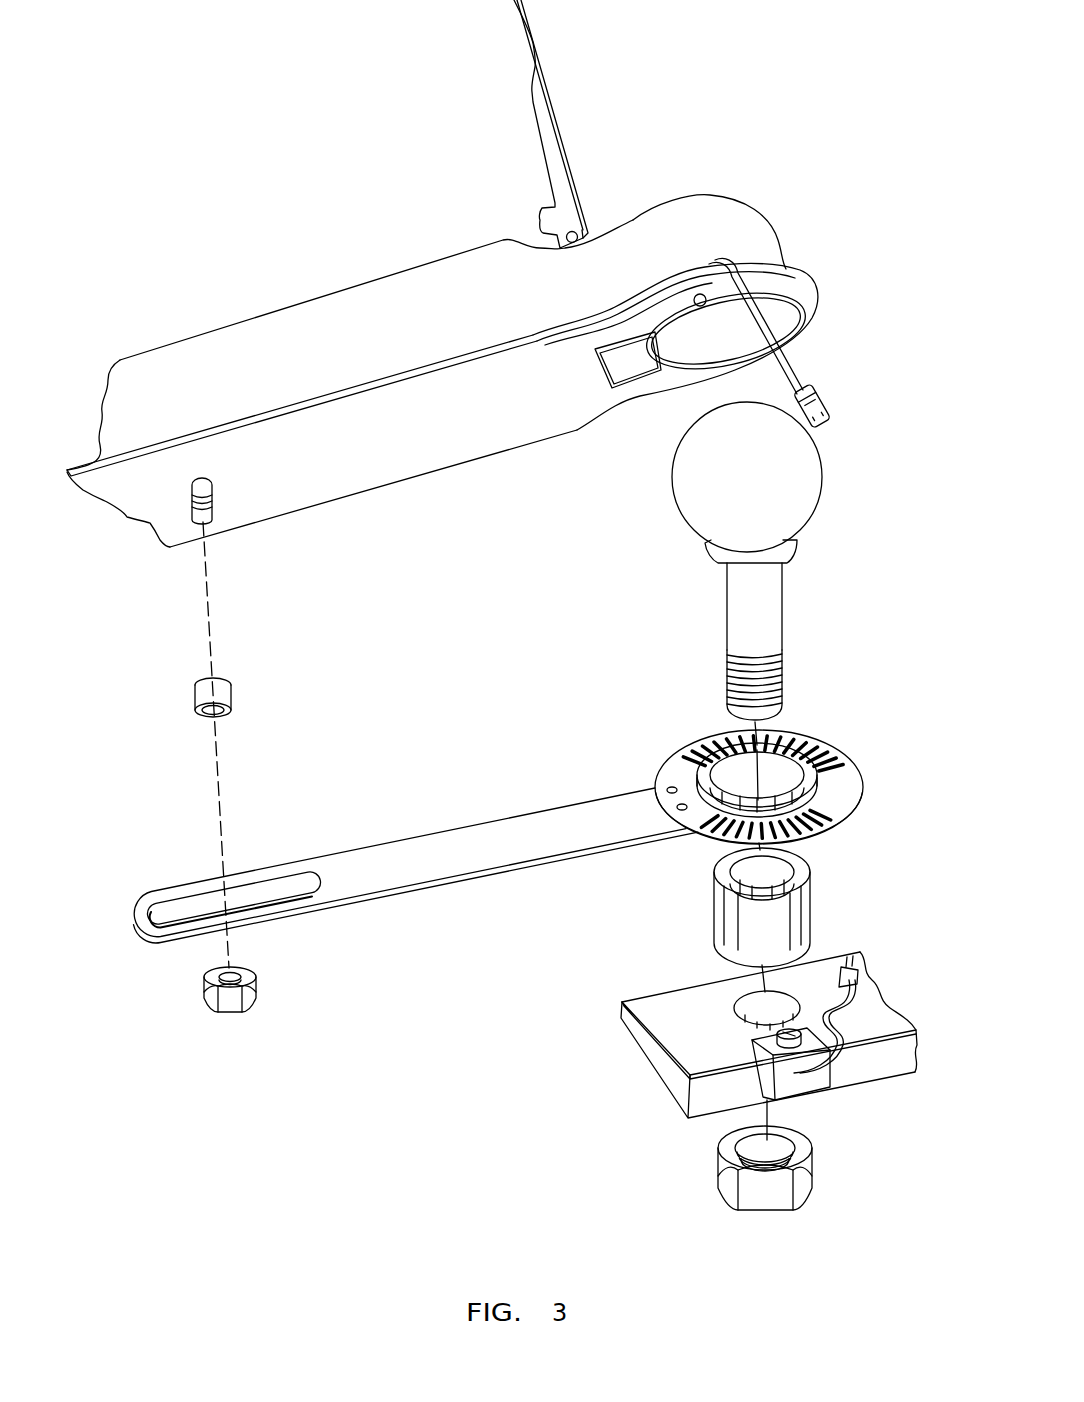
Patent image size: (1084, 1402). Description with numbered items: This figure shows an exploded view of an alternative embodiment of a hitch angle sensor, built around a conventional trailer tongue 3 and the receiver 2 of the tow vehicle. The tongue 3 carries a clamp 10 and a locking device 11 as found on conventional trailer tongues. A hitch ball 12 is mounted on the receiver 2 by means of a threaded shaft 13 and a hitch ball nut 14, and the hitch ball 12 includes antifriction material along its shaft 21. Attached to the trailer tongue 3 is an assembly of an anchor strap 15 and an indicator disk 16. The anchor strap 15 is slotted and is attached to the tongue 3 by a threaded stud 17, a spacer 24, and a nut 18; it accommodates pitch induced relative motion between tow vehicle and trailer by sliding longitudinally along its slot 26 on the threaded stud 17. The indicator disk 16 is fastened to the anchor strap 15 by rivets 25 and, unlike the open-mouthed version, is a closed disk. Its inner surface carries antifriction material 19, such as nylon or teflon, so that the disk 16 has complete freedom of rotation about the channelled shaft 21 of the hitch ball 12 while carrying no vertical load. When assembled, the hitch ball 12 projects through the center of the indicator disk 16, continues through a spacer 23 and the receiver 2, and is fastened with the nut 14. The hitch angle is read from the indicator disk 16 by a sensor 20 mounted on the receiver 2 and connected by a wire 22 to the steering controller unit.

The receiver 2 is at (686, 1021).
The tongue 3 is at (441, 258).
The clamp 10 is at (560, 113).
The locking device 11 is at (640, 358).
The hitch ball 12 is at (797, 470).
The threaded shaft 13 is at (777, 687).
The hitch ball nut 14 is at (802, 1182).
The anchor strap 15 is at (455, 846).
The indicator disk 16 is at (737, 842).
The threaded stud 17 is at (212, 508).
The nut 18 is at (225, 997).
The antifriction material 19 is at (712, 797).
The sensor 20 is at (688, 1068).
The shaft 21 is at (773, 578).
The wire 22 is at (713, 262).
The spacer 23 is at (792, 913).
The spacer 24 is at (205, 690).
The rivets 25 is at (671, 787).
The slot 26 is at (177, 898).